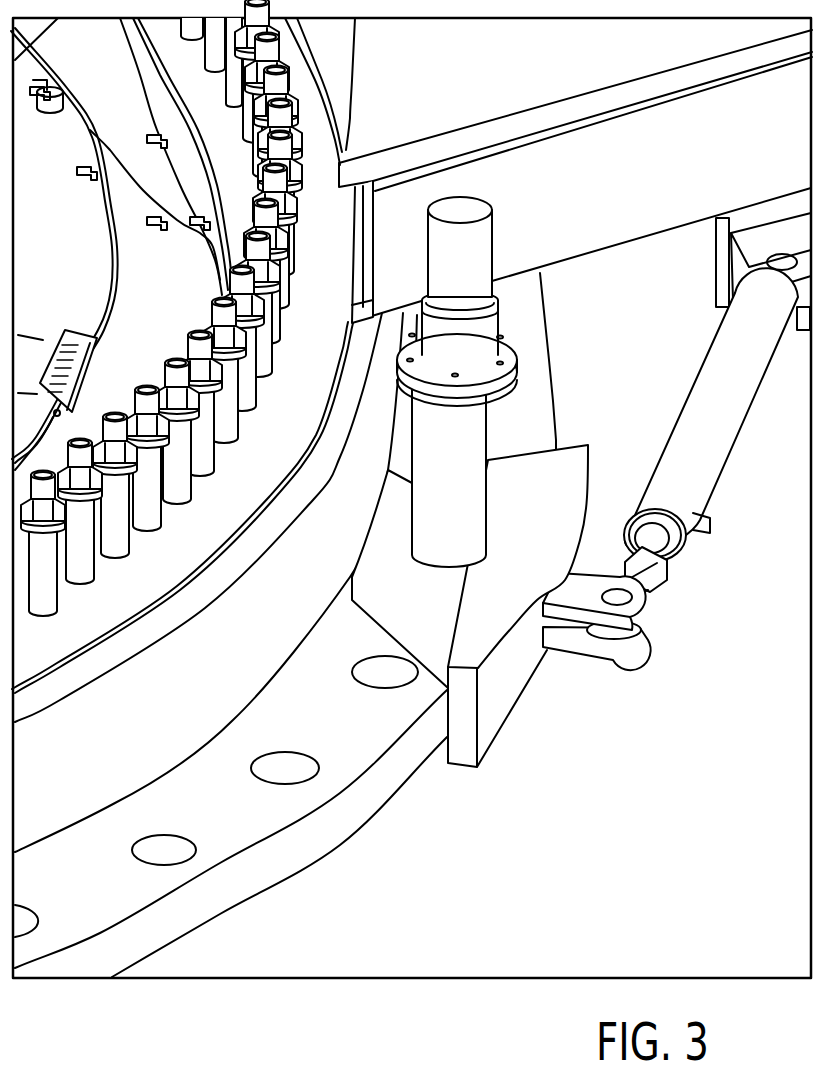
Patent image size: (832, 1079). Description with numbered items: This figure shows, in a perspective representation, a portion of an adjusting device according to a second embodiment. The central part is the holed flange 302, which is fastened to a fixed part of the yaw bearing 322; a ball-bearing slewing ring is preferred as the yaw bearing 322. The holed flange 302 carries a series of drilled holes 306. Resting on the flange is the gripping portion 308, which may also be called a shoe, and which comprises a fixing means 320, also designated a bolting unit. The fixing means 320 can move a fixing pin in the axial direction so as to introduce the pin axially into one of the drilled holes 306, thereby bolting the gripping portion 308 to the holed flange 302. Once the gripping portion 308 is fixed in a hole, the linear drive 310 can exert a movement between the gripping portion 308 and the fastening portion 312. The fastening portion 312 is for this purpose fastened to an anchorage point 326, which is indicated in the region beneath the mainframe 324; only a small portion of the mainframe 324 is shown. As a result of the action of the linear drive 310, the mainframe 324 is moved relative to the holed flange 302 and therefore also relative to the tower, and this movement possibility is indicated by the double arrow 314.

The holed flange 302 is at (237, 888).
The drilled holes 306 is at (175, 848).
The gripping portion 308 is at (473, 643).
The linear drive 310 is at (753, 445).
The fastening portion 312 is at (744, 298).
The double arrow 314 is at (682, 382).
The fixing means 320 is at (526, 333).
The yaw bearing 322 is at (158, 728).
The mainframe 324 is at (646, 184).
The anchorage point 326 is at (738, 232).